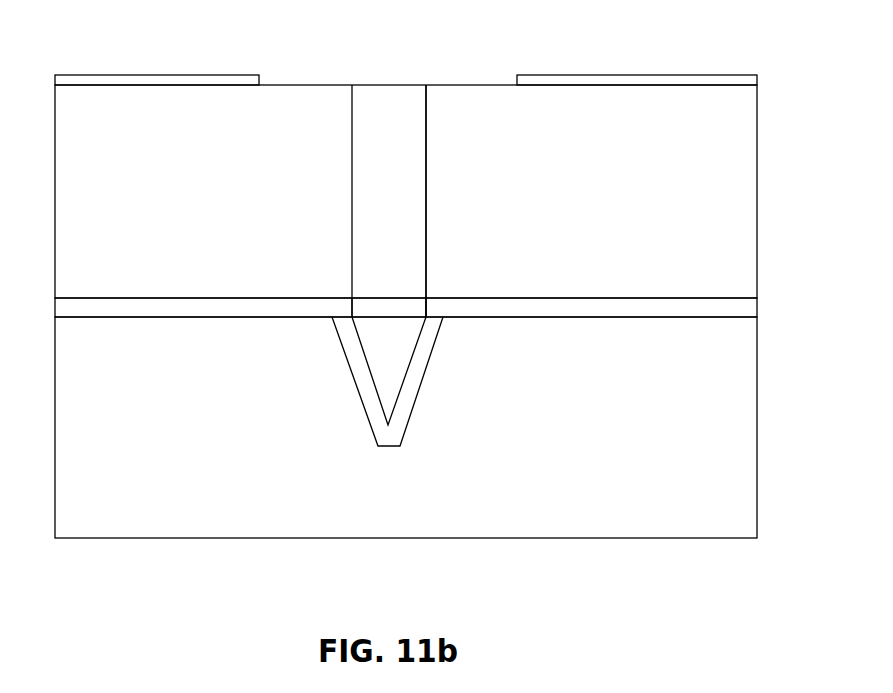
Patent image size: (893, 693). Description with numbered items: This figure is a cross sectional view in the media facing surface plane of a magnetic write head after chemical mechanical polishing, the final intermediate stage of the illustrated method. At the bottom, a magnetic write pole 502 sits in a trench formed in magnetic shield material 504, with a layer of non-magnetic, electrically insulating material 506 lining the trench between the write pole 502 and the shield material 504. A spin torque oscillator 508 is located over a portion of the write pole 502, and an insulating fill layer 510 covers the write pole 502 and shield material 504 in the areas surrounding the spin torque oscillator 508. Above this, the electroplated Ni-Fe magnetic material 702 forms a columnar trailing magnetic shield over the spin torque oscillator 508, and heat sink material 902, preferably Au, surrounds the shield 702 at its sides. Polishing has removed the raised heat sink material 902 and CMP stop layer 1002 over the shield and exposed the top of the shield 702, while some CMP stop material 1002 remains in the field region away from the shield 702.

The CMP stop layer 1002 is at (155, 80).
The heat sink material 902 is at (232, 195).
The magnetic material 702 is at (403, 150).
The insulating fill layer 510 is at (238, 307).
The spin torque oscillator 508 is at (390, 305).
The magnetic write pole 502 is at (400, 338).
The non-magnetic, electrically insulating material 506 is at (418, 372).
The magnetic shield material 504 is at (513, 472).